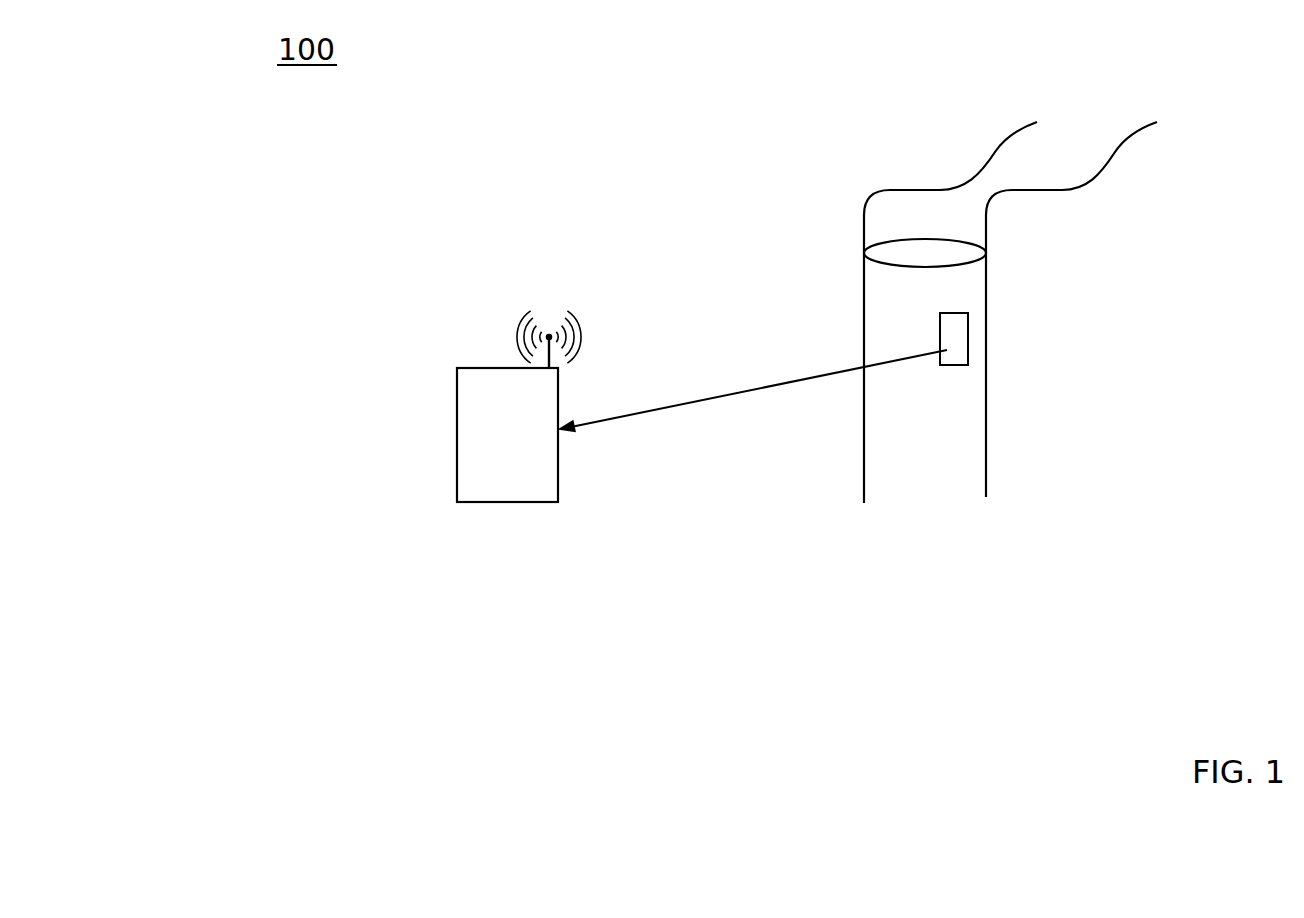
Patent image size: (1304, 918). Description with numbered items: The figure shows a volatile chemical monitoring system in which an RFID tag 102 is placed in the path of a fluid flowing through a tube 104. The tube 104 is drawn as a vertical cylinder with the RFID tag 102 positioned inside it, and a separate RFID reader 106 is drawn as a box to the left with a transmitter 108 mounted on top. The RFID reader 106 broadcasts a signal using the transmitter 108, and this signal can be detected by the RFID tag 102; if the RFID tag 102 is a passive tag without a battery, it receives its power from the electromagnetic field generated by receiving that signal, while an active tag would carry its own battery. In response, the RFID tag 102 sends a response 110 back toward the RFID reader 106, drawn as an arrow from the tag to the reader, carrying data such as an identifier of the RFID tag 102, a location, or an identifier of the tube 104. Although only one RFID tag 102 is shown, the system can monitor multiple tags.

The RFID tag 102 is at (953, 342).
The tube 104 is at (984, 285).
The RFID reader 106 is at (462, 375).
The transmitter 108 is at (523, 342).
The response 110 is at (740, 392).